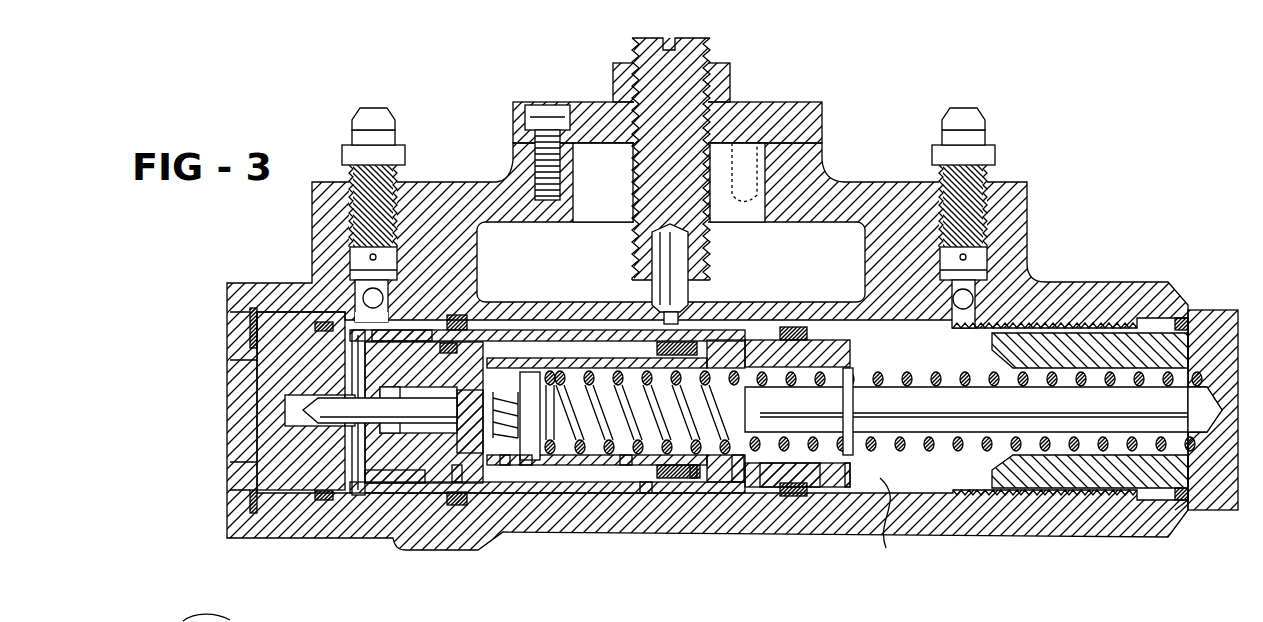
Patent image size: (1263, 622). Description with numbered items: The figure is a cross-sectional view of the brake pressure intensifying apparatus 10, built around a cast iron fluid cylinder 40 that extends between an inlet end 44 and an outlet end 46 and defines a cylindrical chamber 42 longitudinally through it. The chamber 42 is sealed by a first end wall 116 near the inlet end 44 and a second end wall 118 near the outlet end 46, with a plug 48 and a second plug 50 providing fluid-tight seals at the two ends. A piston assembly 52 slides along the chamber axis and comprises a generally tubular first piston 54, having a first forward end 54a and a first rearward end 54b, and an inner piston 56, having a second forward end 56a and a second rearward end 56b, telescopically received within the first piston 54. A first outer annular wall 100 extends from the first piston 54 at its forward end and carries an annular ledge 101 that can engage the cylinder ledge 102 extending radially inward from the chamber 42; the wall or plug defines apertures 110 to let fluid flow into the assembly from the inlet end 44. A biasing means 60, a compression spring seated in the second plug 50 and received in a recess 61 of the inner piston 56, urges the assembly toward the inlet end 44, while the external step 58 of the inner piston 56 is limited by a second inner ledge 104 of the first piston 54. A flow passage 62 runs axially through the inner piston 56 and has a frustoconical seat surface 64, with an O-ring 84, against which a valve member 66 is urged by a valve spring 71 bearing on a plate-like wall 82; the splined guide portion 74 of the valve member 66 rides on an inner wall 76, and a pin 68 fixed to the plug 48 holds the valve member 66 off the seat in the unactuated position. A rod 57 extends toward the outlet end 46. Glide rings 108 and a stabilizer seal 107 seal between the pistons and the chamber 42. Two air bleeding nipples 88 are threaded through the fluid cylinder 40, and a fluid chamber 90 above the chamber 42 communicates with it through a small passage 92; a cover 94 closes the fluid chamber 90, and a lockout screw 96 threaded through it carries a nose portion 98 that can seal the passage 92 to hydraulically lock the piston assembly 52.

The brake pressure intensifying apparatus 10 is at (1078, 147).
The fluid cylinder 40 is at (1020, 193).
The cylindrical chamber 42 is at (888, 524).
The inlet end 44 is at (367, 305).
The outlet end 46 is at (975, 304).
The plug 48 is at (235, 443).
The second plug 50 is at (1233, 311).
The piston assembly 52 is at (628, 462).
The first piston 54 is at (563, 497).
The first forward end 54a is at (387, 493).
The first rearward end 54b is at (857, 470).
The inner piston 56 is at (630, 470).
The second forward end 56a is at (490, 328).
The second rearward end 56b is at (790, 495).
The output rod 57 is at (850, 372).
The external step 58 is at (505, 465).
The biasing means 60 is at (1175, 505).
The recess 61 is at (738, 470).
The flow passage 62 is at (383, 390).
The seat surface 64 is at (505, 330).
The valve member 66 is at (477, 408).
The pin 68 is at (297, 412).
The valve spring 71 is at (528, 462).
The splined guide portion 74 is at (152, 621).
The inner wall 76 is at (550, 330).
The plate-like wall 82 is at (583, 330).
The O-ring 84 is at (458, 470).
The air bleeding nipples 88 is at (397, 128).
The fluid chamber 90 is at (845, 227).
The small passage 92 is at (677, 318).
The cover 94 is at (800, 112).
The lockout screw 96 is at (637, 40).
The nose portion 98 is at (655, 293).
The first outer annular wall 100 is at (377, 498).
The annular ledge 101 is at (378, 498).
The annular ledge 102 is at (393, 318).
The second inner ledge 104 is at (647, 470).
The stabilizer seal 107 is at (695, 470).
The glide rings 108 is at (467, 320).
The aperture 110 is at (337, 346).
The first end wall 116 is at (347, 443).
The second end wall 118 is at (1198, 450).